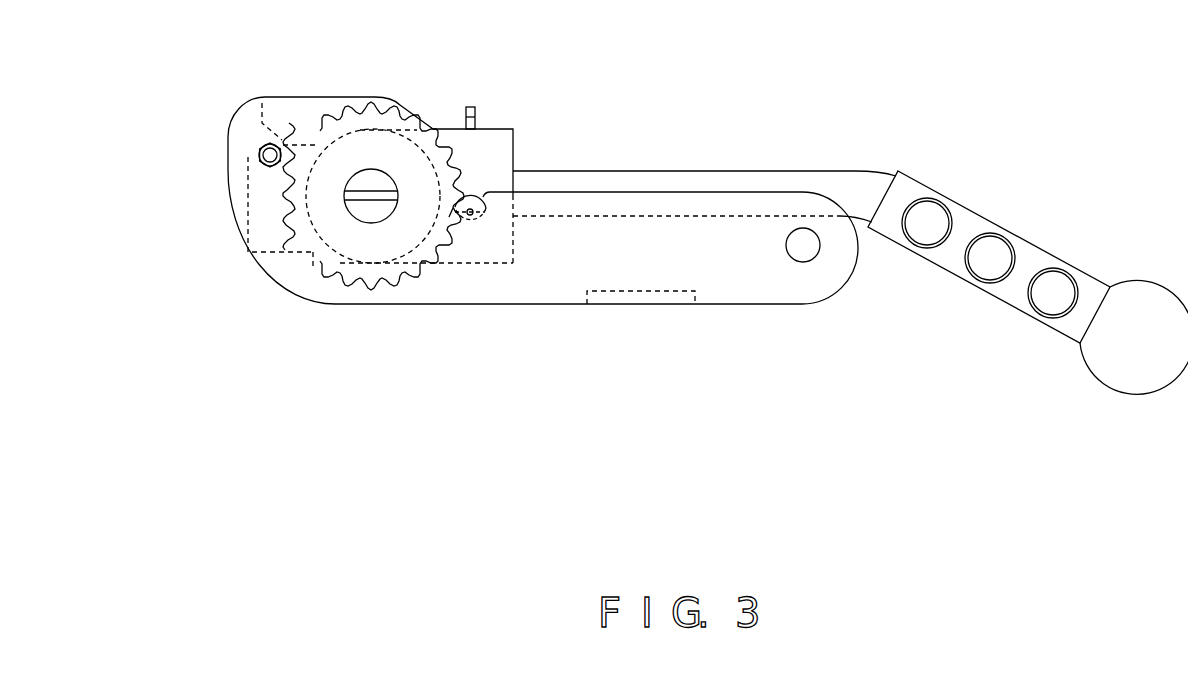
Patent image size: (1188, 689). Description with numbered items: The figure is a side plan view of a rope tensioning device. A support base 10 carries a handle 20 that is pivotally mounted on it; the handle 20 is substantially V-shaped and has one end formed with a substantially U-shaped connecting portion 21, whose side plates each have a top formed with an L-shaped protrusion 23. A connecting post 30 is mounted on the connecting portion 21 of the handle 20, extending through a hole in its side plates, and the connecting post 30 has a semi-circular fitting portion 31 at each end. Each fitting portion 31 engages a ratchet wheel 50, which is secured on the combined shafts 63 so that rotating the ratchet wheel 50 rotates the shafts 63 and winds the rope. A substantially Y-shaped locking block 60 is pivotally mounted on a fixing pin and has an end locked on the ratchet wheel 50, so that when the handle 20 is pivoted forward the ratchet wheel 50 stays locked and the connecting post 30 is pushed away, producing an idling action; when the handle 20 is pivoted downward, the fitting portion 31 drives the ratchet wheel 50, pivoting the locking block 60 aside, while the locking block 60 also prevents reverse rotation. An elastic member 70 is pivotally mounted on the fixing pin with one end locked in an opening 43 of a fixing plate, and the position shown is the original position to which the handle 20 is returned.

The support base 10 is at (745, 273).
The handle 20 is at (732, 180).
The connecting portion 21 is at (498, 148).
The L-shaped protrusion 23 is at (473, 107).
The connecting post 30 is at (473, 240).
The fitting portion 31 is at (483, 222).
The opening 43 is at (253, 197).
The ratchet wheel 50 is at (318, 262).
The locking block 60 is at (285, 127).
The shaft 63 is at (370, 210).
The elastic member 70 is at (262, 182).